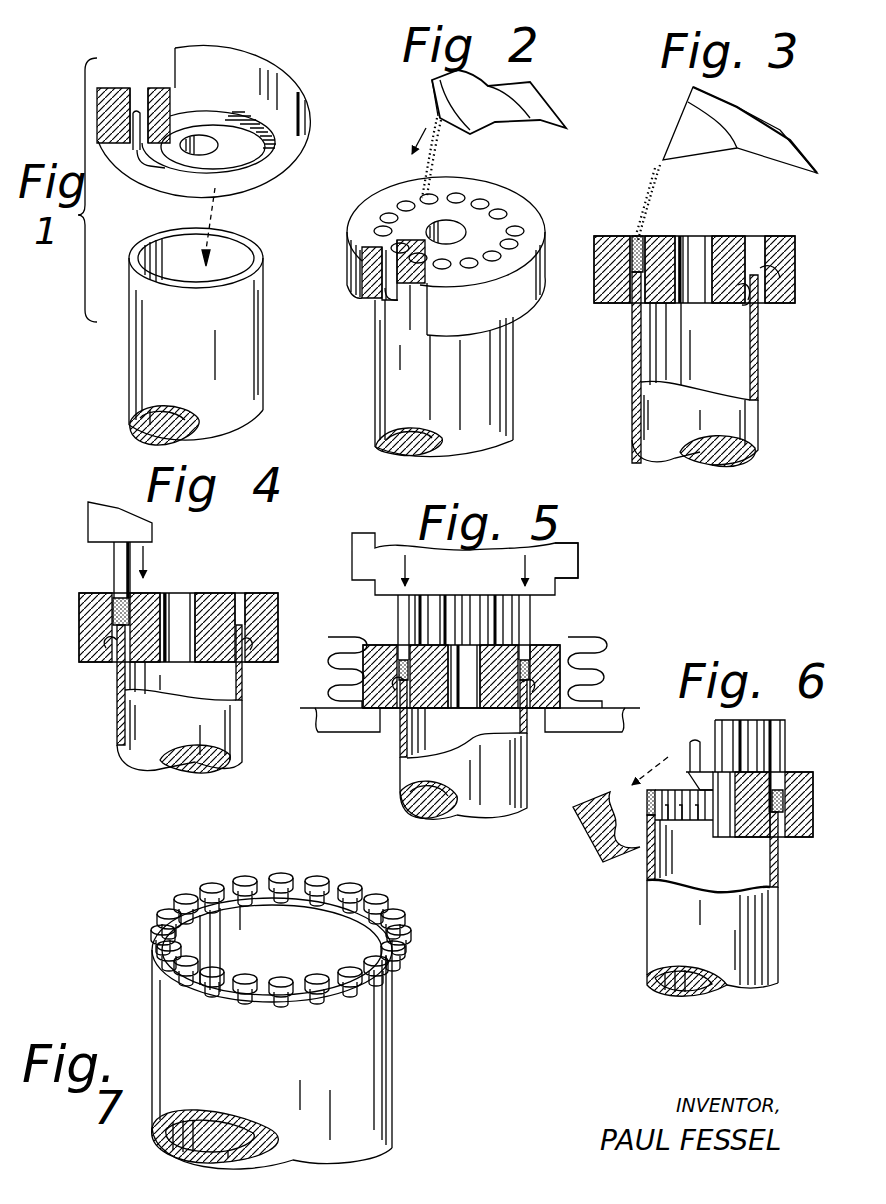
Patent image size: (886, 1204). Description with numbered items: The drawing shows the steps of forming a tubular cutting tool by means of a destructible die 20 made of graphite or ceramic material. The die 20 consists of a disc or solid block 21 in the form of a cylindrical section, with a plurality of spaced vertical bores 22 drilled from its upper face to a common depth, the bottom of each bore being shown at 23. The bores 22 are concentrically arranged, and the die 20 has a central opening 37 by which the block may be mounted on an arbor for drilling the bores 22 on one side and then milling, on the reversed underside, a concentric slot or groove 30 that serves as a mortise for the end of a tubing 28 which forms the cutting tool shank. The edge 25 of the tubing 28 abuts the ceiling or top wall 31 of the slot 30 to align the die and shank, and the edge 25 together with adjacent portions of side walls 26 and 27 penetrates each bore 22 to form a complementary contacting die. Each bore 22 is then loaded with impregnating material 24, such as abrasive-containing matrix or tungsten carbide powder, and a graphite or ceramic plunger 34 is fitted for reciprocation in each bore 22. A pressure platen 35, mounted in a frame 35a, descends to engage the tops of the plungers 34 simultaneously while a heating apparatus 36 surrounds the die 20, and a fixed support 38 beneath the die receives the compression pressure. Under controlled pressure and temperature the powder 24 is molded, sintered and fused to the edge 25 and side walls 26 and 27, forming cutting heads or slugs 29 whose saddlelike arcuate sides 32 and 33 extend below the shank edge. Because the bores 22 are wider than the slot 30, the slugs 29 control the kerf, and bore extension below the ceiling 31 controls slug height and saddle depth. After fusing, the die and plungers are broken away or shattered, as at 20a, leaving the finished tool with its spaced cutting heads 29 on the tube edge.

In FIG. 1, the main die 20 is at (229, 134).
In FIG. 2, the main die 20 is at (456, 240).
In FIG. 3, the main die 20 is at (712, 271).
In FIG. 4, the main die 20 is at (198, 606).
In FIG. 5, the main die 20 is at (561, 640).
In FIG. 6, the main die 20 is at (820, 770).
In FIG. 6, the shattered die 20a is at (590, 845).
In FIG. 1, the disc or solid block 21 is at (303, 142).
In FIG. 1, the bores 22 is at (140, 92).
In FIG. 2, the bores 22 is at (504, 215).
In FIG. 3, the bores 22 is at (758, 240).
In FIG. 3, the bottom of bore 23 is at (624, 292).
In FIG. 2, the impregnating material 24 is at (432, 150).
In FIG. 3, the impregnating material 24 is at (648, 228).
In FIG. 4, the impregnating material 24 is at (114, 592).
In FIG. 1, the edge of tubing 25 is at (146, 250).
In FIG. 2, the edge of tubing 25 is at (410, 290).
In FIG. 3, the edge of tubing 25 is at (782, 272).
In FIG. 4, the edge of tubing 25 is at (240, 615).
In FIG. 7, the edge of tubing 25 is at (250, 876).
In FIG. 1, the side wall 26 is at (242, 258).
In FIG. 7, the side wall 26 is at (290, 900).
In FIG. 1, the side wall 27 is at (136, 342).
In FIG. 2, the side wall 27 is at (513, 375).
In FIG. 3, the side wall 27 is at (760, 336).
In FIG. 4, the side wall 27 is at (116, 724).
In FIG. 6, the side wall 27 is at (780, 870).
In FIG. 7, the side wall 27 is at (394, 1011).
In FIG. 1, the tubing 28 is at (176, 333).
In FIG. 2, the tubing 28 is at (442, 382).
In FIG. 3, the tubing 28 is at (700, 366).
In FIG. 4, the tubing 28 is at (171, 663).
In FIG. 5, the tubing 28 is at (478, 748).
In FIG. 6, the tubing 28 is at (715, 909).
In FIG. 7, the tubing 28 is at (267, 995).
In FIG. 5, the cutting heads or slugs 29 is at (396, 688).
In FIG. 7, the cutting heads or slugs 29 is at (281, 952).
In FIG. 1, the concentric slot or groove 30 is at (170, 170).
In FIG. 2, the concentric slot or groove 30 is at (392, 292).
In FIG. 3, the concentric slot or groove 30 is at (742, 302).
In FIG. 4, the concentric slot or groove 30 is at (110, 655).
In FIG. 1, the ceiling or top wall of slot 31 is at (132, 122).
In FIG. 5, the saddlelike arcuate side of slug 32 is at (414, 690).
In FIG. 7, the saddlelike arcuate side of slug 32 is at (270, 905).
In FIG. 5, the saddlelike arcuate side of slug 33 is at (536, 700).
In FIG. 7, the saddlelike arcuate side of slug 33 is at (295, 1008).
In FIG. 4, the plunger 34 is at (113, 553).
In FIG. 5, the plunger 34 is at (398, 613).
In FIG. 6, the plunger 34 is at (788, 740).
In FIG. 4, the pressure platen 35 is at (150, 532).
In FIG. 5, the pressure platen 35 is at (372, 558).
In FIG. 5, the frame 35a is at (578, 560).
In FIG. 5, the heating apparatus 36 is at (328, 632).
In FIG. 1, the central opening 37 is at (212, 150).
In FIG. 2, the central opening 37 is at (454, 226).
In FIG. 3, the central opening 37 is at (702, 240).
In FIG. 4, the central opening 37 is at (185, 600).
In FIG. 5, the fixed support 38 is at (610, 714).